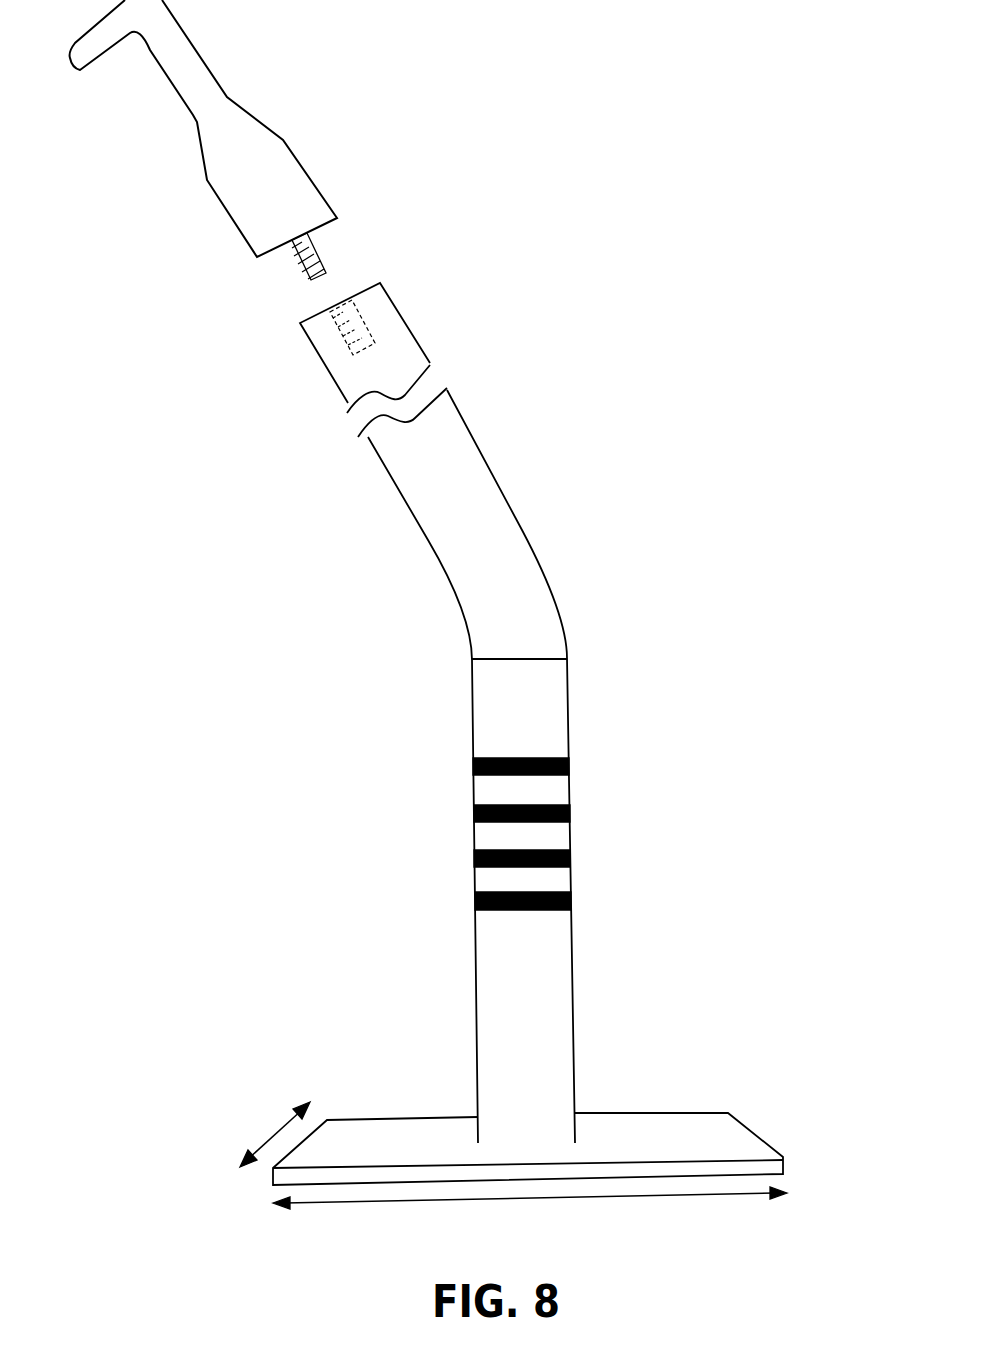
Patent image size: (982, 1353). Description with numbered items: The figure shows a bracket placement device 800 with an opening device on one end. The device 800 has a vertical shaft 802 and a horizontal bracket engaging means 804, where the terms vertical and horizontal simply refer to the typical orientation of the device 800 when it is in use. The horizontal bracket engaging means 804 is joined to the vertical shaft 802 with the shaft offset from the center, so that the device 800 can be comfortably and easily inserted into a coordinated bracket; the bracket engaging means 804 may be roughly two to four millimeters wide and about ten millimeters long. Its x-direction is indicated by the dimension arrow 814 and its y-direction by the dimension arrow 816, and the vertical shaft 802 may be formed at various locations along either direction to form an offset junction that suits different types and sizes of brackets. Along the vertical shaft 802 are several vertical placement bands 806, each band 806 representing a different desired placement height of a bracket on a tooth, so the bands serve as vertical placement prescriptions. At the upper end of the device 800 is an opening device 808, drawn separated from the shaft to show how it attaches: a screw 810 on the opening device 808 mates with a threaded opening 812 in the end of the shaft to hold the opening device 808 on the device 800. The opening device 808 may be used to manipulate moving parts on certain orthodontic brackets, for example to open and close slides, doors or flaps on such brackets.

The bracket placement device 800 is at (152, 593).
The vertical shaft 802 is at (545, 992).
The horizontal bracket engaging means 804 is at (723, 1130).
The vertical placement bands 806 is at (571, 893).
The opening device 808 is at (200, 98).
The screw 810 is at (320, 252).
The threaded opening 812 is at (362, 320).
The x-direction of bracket engaging means 814 is at (266, 1133).
The y-direction of bracket engaging means 816 is at (530, 1208).